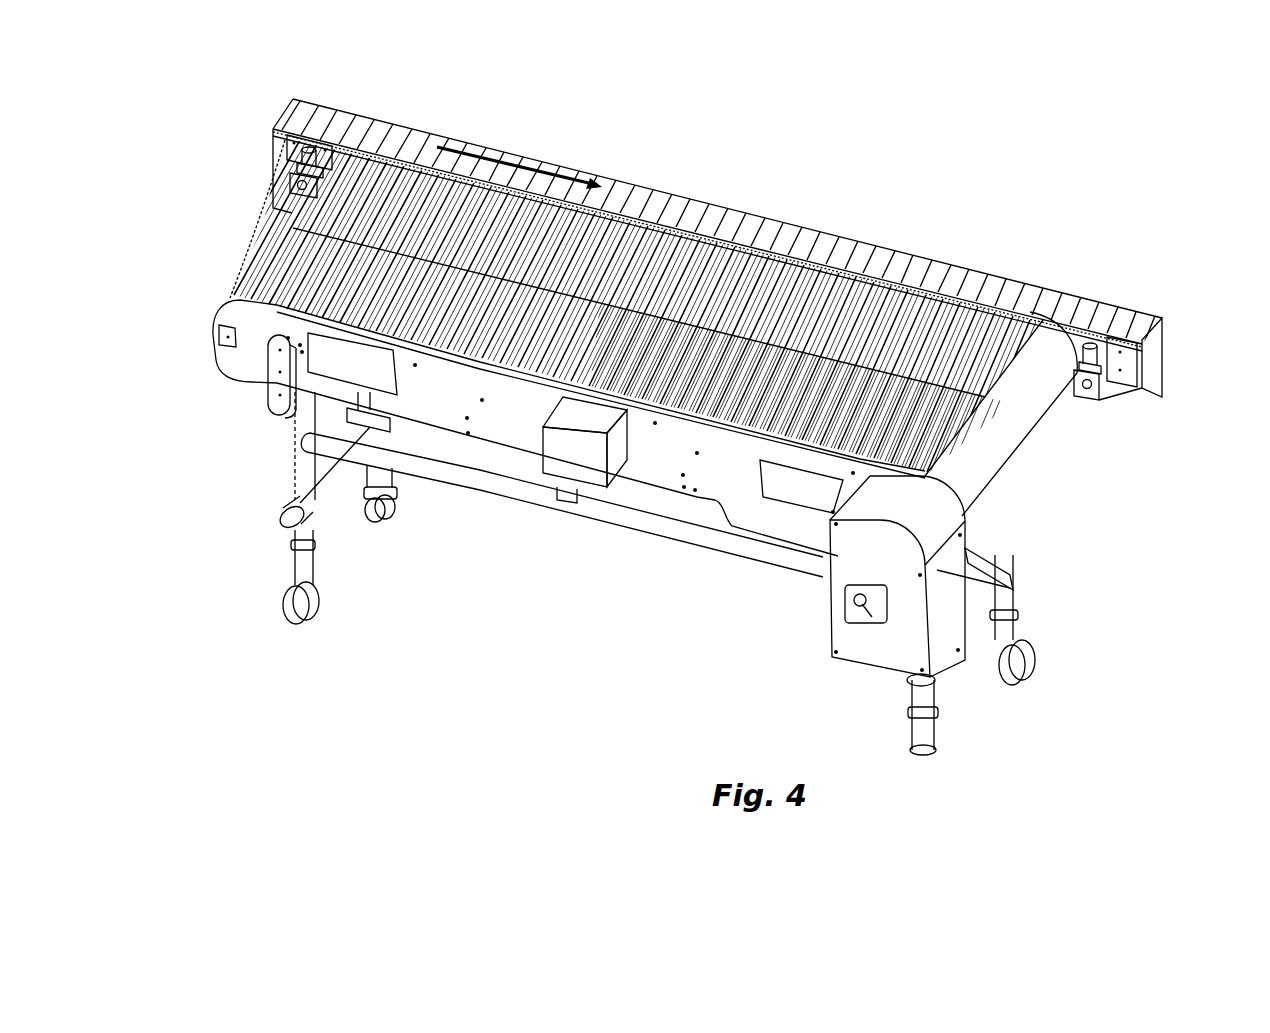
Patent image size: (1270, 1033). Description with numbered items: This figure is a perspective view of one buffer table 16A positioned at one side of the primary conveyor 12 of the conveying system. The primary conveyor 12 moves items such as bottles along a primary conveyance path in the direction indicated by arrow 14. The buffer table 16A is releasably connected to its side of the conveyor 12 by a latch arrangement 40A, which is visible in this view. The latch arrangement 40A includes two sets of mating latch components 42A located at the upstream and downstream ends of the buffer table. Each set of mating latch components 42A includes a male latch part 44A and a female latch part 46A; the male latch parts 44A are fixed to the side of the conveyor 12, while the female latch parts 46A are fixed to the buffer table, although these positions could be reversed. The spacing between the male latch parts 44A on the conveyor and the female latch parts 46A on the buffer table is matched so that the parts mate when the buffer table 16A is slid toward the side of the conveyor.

The primary conveyor 12 is at (946, 267).
The arrow 14 is at (515, 165).
The buffer table 16A is at (243, 374).
The latch arrangement 40A is at (700, 315).
The mating latch components 42A is at (286, 187).
The male latch part 44A is at (300, 190).
The female latch part 46A is at (291, 165).